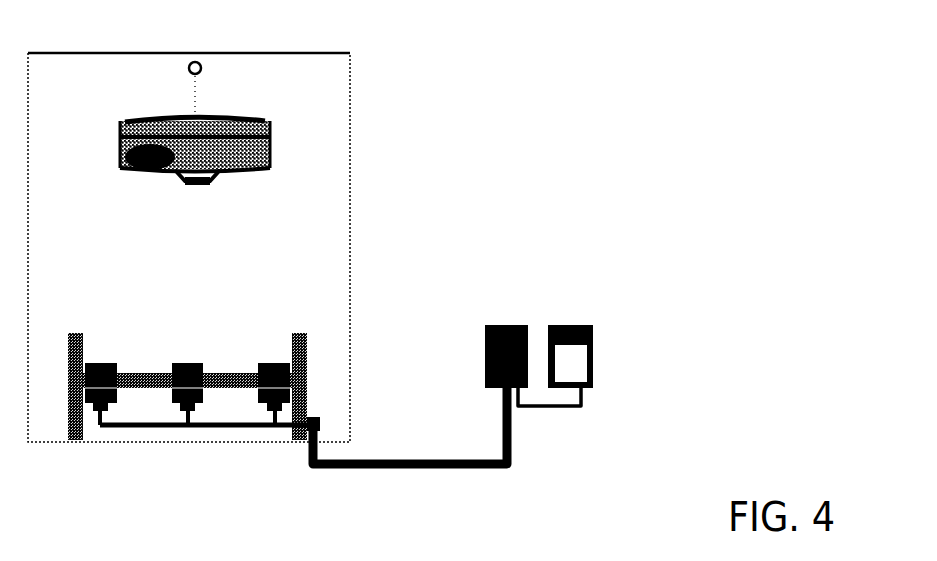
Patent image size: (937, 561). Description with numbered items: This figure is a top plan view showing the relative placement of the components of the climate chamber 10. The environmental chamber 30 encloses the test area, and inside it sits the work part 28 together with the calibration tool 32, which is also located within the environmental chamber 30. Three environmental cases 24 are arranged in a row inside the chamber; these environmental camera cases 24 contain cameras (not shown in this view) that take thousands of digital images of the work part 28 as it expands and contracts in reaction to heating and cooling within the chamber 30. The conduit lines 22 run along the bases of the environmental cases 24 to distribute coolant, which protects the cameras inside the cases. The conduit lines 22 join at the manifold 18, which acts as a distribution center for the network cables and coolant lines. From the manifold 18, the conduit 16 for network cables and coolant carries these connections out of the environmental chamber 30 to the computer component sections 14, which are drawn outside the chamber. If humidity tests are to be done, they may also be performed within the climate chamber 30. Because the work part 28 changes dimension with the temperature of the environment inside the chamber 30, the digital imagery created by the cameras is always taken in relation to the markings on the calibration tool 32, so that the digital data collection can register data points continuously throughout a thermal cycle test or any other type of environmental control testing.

The climate chamber 10 is at (497, 181).
The computer system 14 is at (573, 363).
The conduit 16 is at (403, 470).
The manifold 18 is at (320, 424).
The conduit lines 22 is at (148, 427).
The environmental cases 24 is at (113, 380).
The work part 28 is at (248, 125).
The environmental chamber 30 is at (335, 160).
The calibration tool 32 is at (210, 68).